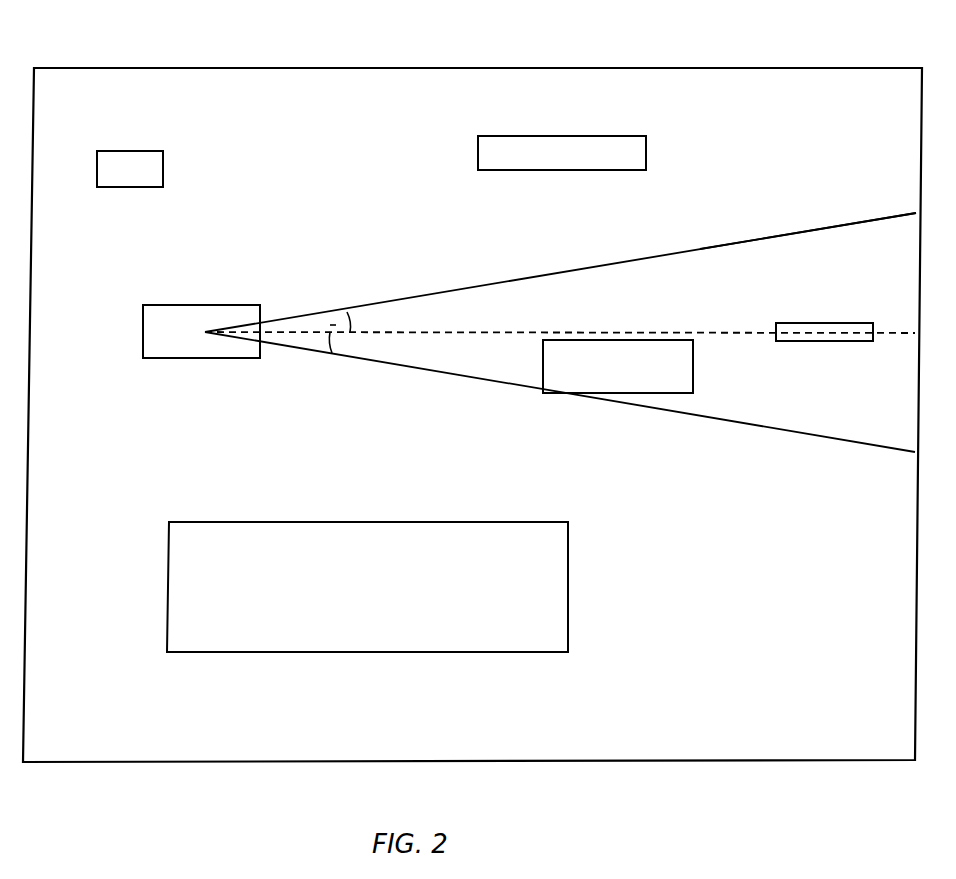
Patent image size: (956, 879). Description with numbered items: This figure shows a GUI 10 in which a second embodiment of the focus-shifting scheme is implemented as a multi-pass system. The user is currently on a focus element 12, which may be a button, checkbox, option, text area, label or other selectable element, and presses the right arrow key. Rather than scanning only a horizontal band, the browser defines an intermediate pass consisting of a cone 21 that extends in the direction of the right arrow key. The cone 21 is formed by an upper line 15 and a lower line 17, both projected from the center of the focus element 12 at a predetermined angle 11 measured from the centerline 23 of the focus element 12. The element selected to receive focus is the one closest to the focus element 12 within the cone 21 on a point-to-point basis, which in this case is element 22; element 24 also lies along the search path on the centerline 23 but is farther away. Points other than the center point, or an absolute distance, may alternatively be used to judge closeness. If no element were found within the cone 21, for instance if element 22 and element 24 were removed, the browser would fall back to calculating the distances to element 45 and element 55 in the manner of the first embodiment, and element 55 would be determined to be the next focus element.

The GUI 10 is at (393, 66).
The predetermined angle 11 is at (351, 320).
The focus element 12 is at (236, 305).
The upper line 15 is at (410, 294).
The lower line 17 is at (396, 368).
The cone 21 is at (728, 257).
The element 22 is at (694, 379).
The centerline 23 is at (529, 327).
The element 24 is at (824, 342).
The element 45 is at (582, 134).
The element 55 is at (465, 521).